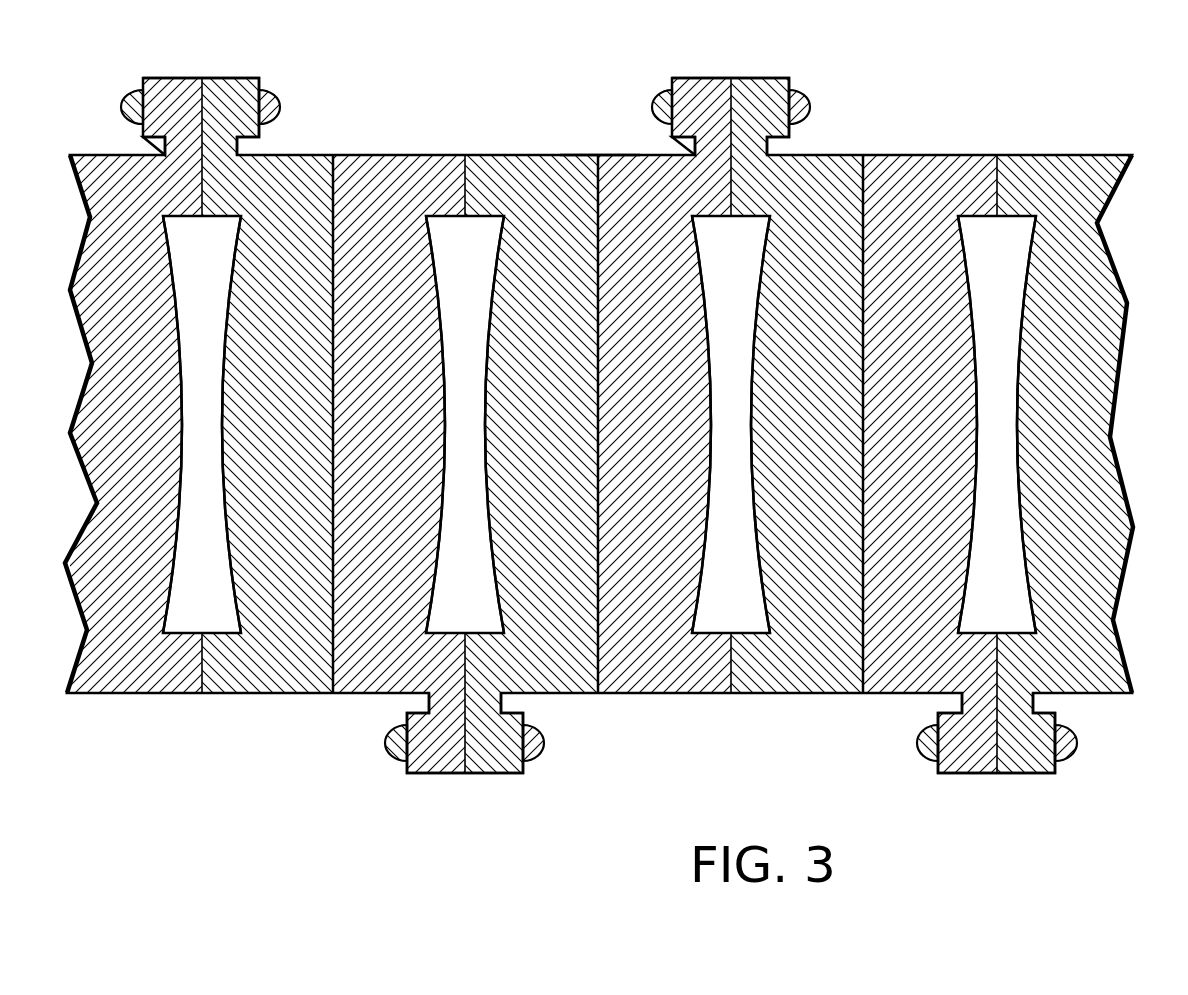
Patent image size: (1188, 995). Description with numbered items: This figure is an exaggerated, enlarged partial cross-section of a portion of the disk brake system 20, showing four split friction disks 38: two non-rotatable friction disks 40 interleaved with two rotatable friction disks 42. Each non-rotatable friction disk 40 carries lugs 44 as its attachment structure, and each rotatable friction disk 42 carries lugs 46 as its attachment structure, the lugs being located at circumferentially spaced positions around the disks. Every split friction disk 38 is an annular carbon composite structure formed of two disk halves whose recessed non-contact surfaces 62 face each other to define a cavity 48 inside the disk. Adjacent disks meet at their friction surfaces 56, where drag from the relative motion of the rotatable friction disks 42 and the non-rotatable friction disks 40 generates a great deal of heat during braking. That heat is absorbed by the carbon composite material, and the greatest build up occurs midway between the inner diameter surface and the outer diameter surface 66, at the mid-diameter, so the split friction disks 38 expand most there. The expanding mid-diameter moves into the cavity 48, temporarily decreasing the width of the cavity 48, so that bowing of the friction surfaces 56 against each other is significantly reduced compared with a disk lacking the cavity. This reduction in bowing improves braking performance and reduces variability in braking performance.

The disk brake system 20 is at (982, 60).
The split friction disk 38 is at (623, 152).
The non-rotatable friction disk 40 is at (496, 152).
The rotatable friction disk 42 is at (308, 150).
The lug 44 is at (502, 773).
The lug 46 is at (212, 78).
The cavity 48 is at (189, 596).
The friction surface 56 is at (333, 693).
The non-contact surface 62 is at (228, 295).
The outer diameter surface 66 is at (1082, 153).